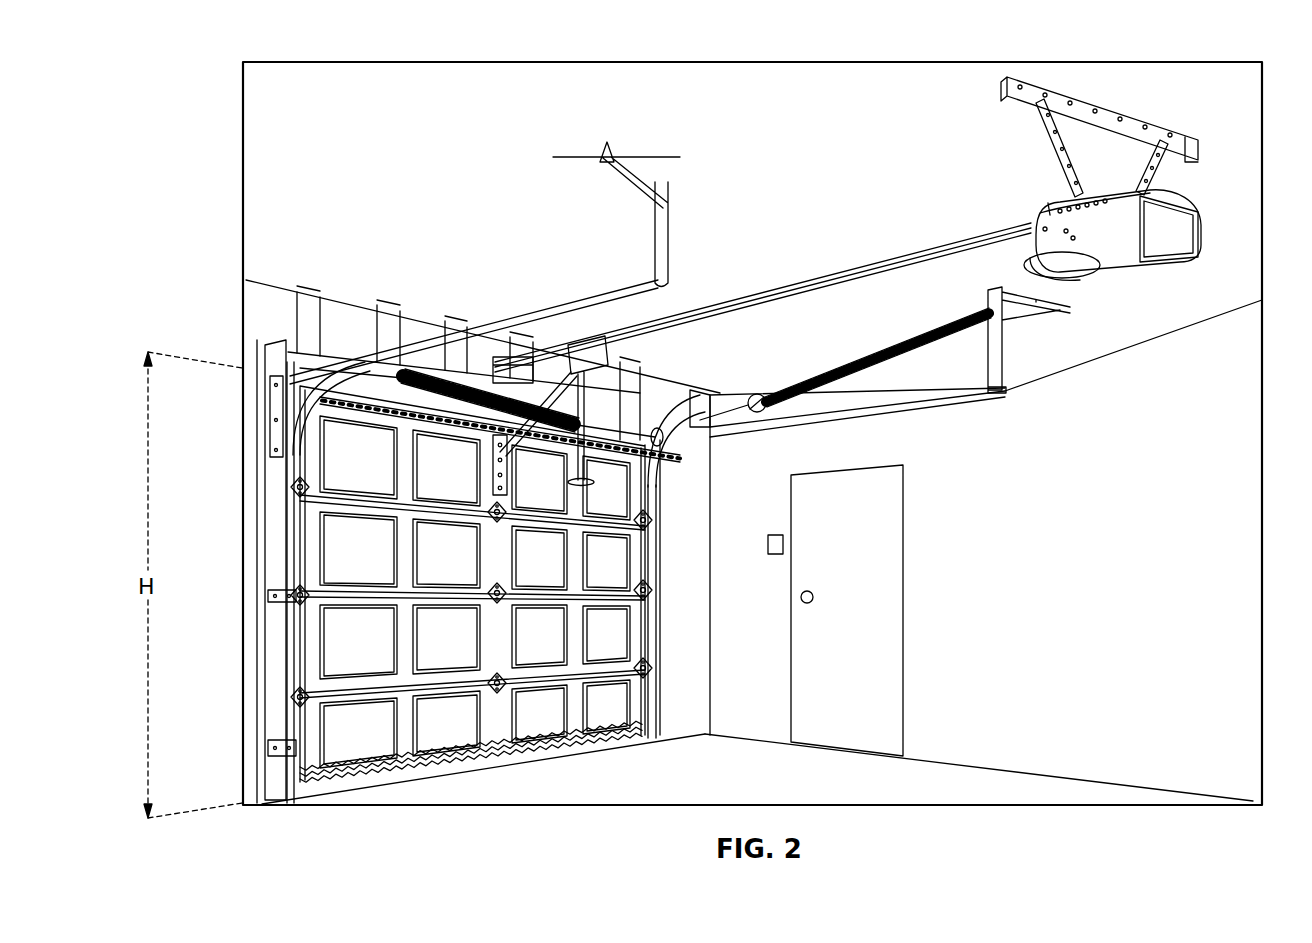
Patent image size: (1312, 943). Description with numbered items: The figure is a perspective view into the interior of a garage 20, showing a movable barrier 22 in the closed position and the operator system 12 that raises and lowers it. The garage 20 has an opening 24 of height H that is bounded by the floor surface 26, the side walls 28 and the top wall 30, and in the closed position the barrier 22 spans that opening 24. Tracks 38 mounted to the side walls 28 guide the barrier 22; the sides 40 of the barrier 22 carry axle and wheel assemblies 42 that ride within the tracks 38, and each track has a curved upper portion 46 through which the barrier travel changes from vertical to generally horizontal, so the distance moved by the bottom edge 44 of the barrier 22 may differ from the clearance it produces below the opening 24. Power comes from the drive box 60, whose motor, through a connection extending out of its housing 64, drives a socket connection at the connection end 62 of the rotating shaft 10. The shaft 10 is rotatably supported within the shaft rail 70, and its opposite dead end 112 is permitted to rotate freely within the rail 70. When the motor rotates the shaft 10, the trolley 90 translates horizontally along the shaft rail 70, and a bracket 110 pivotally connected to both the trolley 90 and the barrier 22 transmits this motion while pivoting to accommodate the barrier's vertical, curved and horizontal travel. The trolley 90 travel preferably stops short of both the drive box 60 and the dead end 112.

The rotating shaft 10 is at (763, 297).
The operator system 12 is at (1206, 213).
The garage 20 is at (806, 180).
The movable barrier 22 is at (493, 740).
The opening 24 is at (660, 620).
The floor surface 26 is at (641, 793).
The side walls 28 is at (268, 468).
The top wall 30 is at (407, 330).
The tracks 38 is at (290, 627).
The sides 40 is at (305, 656).
The axle and wheel assemblies 42 is at (288, 598).
The bottom edge 44 is at (402, 790).
The curved upper portion 46 is at (310, 425).
The drive box 60 is at (1117, 256).
The connection end 62 is at (1081, 191).
The housing 64 is at (1170, 260).
The shaft rail 70 is at (735, 300).
The trolley 90 is at (590, 362).
The bracket 110 is at (515, 455).
The dead end 112 is at (505, 368).